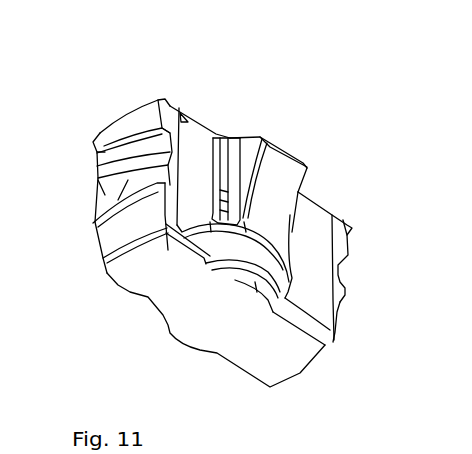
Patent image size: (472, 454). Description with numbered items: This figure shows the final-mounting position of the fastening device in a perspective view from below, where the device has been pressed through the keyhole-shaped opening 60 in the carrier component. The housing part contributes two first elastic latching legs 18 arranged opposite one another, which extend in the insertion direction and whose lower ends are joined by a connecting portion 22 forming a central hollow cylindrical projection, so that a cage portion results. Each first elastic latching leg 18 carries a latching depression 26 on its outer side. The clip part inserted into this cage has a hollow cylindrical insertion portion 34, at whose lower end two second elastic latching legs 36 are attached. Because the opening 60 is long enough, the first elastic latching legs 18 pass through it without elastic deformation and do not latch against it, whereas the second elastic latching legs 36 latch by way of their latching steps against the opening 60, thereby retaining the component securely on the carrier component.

The keyhole-shaped opening 60 is at (128, 110).
The hollow cylindrical insertion portion 34 is at (195, 155).
The second elastic latching legs 36 is at (285, 172).
The latching depression 26 is at (105, 200).
The first elastic latching legs 18 is at (108, 236).
The connecting portion 22 is at (150, 293).